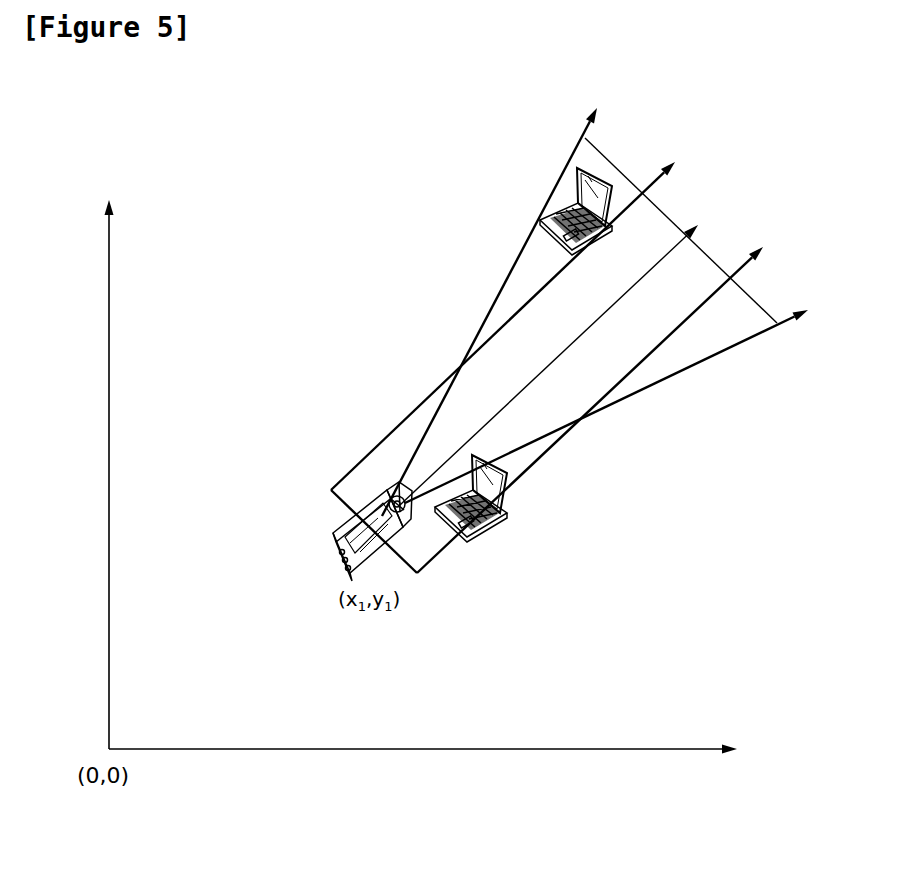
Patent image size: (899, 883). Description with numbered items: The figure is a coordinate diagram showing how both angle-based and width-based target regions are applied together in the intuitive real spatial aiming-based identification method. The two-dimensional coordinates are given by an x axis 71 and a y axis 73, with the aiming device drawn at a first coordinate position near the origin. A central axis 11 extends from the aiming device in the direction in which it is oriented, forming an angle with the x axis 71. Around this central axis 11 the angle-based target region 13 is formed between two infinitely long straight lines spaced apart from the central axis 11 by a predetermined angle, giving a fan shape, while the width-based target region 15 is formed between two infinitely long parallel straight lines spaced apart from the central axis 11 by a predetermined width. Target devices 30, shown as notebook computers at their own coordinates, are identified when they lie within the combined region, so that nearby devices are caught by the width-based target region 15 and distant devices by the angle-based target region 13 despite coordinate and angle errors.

The central axis 11 is at (505, 407).
The angle-based target region 13 is at (692, 347).
The width-based target region 15 is at (588, 372).
The target device 30 is at (505, 512).
The x axis 71 is at (390, 750).
The y axis 73 is at (109, 491).